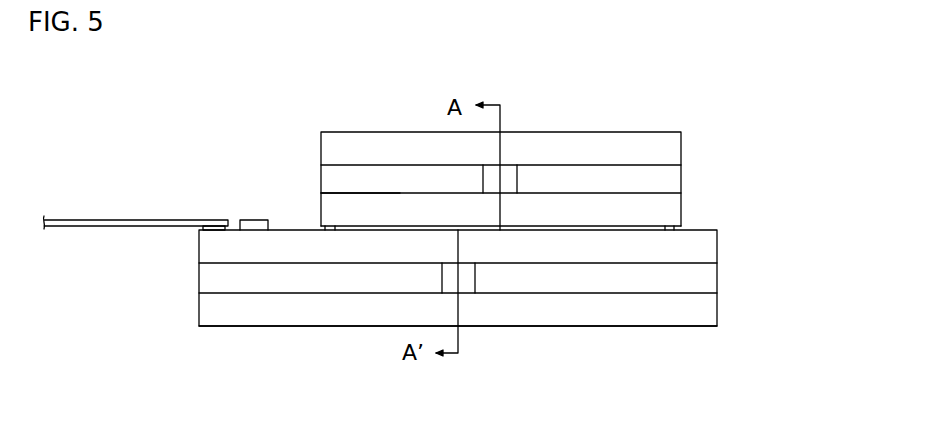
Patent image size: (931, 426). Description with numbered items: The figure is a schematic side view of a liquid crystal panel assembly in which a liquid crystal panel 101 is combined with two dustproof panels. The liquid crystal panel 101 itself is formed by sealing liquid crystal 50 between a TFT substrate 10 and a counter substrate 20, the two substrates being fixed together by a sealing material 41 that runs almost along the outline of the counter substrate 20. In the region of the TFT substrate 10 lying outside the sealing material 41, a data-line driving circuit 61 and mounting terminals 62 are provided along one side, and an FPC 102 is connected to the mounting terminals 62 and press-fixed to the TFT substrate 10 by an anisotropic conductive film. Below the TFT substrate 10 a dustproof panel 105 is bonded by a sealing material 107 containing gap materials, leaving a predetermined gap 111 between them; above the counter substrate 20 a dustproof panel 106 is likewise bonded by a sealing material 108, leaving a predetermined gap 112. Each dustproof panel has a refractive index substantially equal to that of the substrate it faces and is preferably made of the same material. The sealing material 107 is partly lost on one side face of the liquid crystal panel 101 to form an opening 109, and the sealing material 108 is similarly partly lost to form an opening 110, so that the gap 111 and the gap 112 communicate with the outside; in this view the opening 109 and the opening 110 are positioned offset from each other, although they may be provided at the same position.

The TFT substrate 10 is at (705, 250).
The counter substrate 20 is at (668, 205).
The sealing material 41 is at (685, 230).
The liquid crystal 50 is at (640, 228).
The data-line driving circuit 61 is at (250, 220).
The mounting terminals 62 is at (199, 228).
The liquid crystal panel 101 is at (355, 193).
The FPC 102 is at (134, 220).
The dustproof panel 105 is at (607, 315).
The dustproof panel 106 is at (636, 143).
The sealing material 107 is at (705, 279).
The sealing material 108 is at (668, 178).
The opening 109 is at (475, 280).
The opening 110 is at (517, 185).
The gap 111 is at (446, 279).
The gap 112 is at (490, 178).